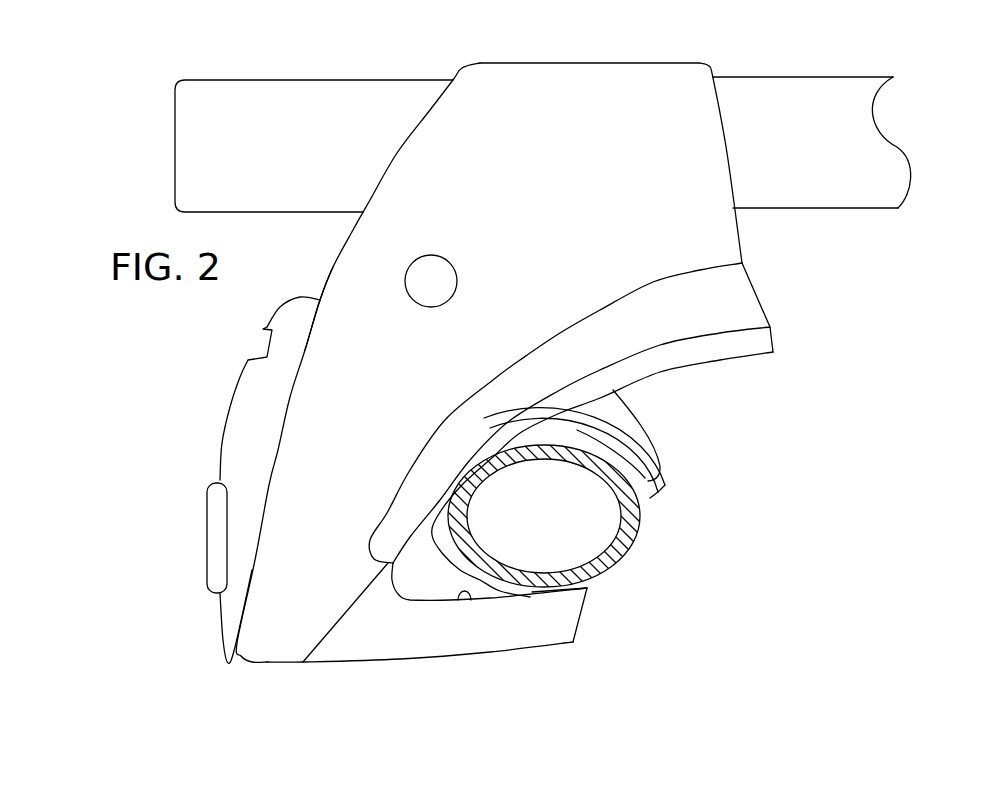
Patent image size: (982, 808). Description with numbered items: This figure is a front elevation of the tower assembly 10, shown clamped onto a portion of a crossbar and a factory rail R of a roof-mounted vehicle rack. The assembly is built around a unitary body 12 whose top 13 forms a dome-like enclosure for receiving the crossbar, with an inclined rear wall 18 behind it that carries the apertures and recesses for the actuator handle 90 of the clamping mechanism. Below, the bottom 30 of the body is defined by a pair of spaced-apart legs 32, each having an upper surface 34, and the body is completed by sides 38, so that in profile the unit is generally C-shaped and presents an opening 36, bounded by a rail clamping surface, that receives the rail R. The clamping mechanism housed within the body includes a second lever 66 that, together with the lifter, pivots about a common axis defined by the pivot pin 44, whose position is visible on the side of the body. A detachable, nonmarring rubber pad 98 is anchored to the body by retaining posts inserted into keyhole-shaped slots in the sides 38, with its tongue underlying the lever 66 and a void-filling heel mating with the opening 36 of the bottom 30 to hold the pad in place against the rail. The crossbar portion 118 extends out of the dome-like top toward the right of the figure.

The tower assembly 10 is at (130, 118).
The unitary body 12 is at (417, 177).
The top 13 is at (550, 63).
The inclined rear wall 18 is at (332, 263).
The bottom 30 is at (512, 659).
The legs 32 is at (558, 625).
The upper surface 34 is at (460, 594).
The opening 36 is at (667, 418).
The sides 38 is at (384, 376).
The pivot pin 44 is at (430, 273).
The second lever 66 is at (648, 465).
The handle 90 is at (253, 424).
The pad 98 is at (732, 302).
The handle bar section 118 is at (825, 160).
The rails R is at (632, 548).